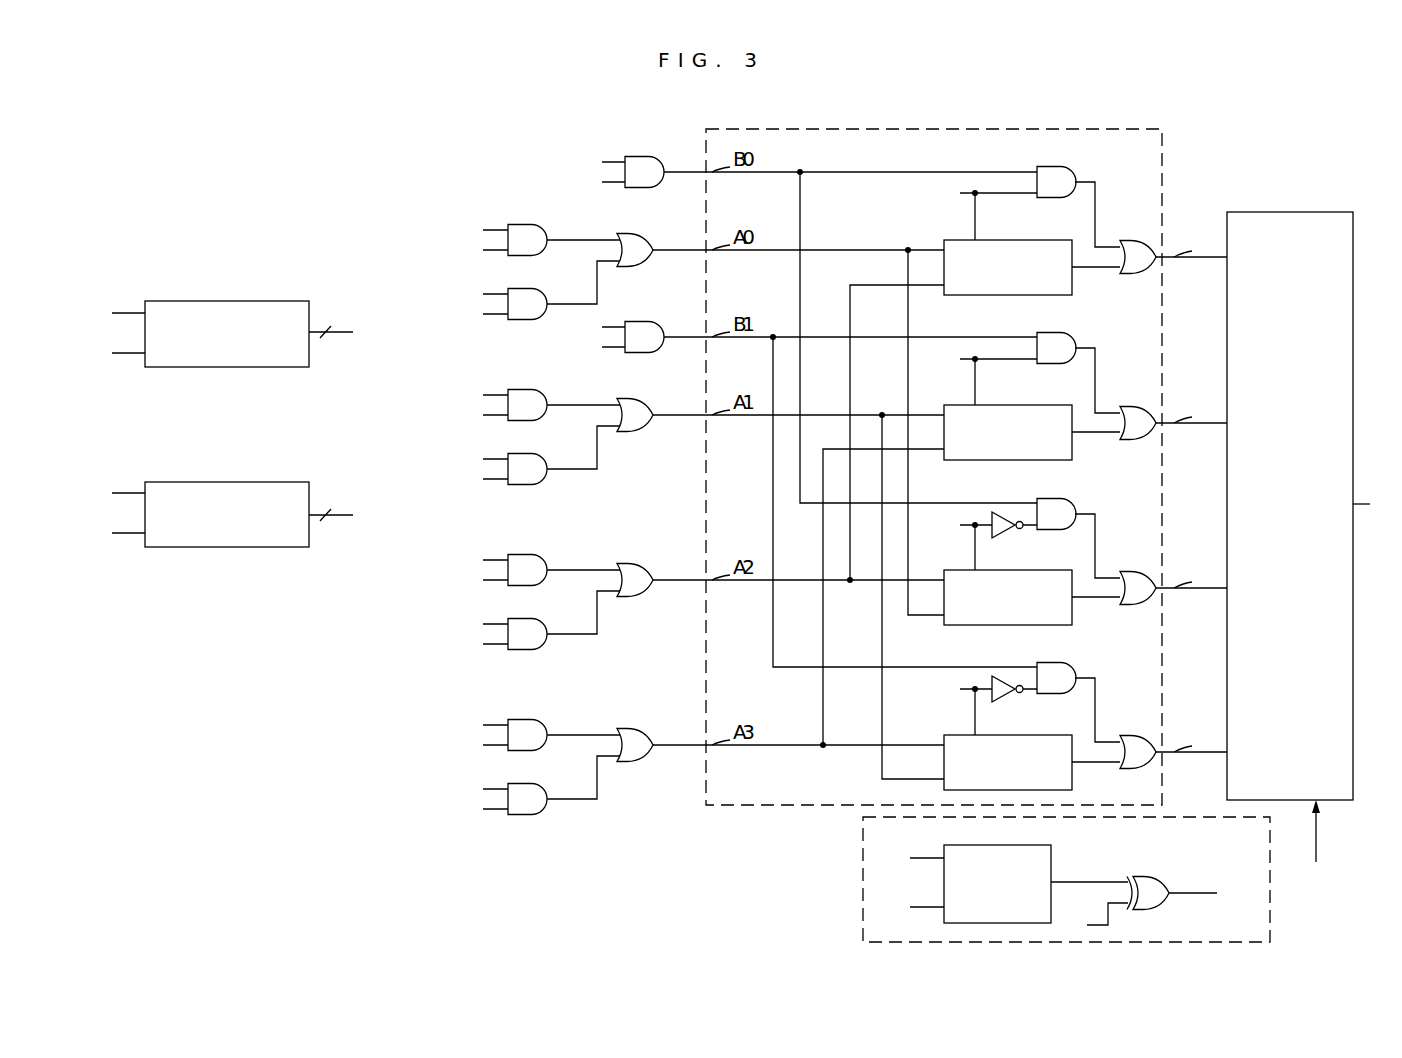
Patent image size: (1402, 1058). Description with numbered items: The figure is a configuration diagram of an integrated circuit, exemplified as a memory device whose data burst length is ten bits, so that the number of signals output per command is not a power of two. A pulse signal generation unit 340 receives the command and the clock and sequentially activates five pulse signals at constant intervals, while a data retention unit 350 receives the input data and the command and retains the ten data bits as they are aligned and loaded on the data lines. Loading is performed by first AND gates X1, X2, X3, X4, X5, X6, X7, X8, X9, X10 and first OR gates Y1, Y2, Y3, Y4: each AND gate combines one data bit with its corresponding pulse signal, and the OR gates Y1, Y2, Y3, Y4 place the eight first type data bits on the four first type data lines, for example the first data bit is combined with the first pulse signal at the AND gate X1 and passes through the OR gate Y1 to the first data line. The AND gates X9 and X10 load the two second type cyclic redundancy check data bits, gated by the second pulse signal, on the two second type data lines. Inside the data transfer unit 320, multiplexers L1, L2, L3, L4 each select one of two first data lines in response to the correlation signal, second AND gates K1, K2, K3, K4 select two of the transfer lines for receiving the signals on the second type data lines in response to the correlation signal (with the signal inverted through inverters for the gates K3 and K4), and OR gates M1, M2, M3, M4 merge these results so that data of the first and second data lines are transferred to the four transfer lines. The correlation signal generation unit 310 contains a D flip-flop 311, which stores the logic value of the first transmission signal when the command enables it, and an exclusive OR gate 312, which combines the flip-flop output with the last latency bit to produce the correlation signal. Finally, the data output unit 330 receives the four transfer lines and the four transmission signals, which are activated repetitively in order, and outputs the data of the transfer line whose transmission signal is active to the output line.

The correlation signal generation unit 310 is at (863, 878).
The D flip-flop 311 is at (1004, 845).
The exclusive OR gate 312 is at (1147, 878).
The data transfer unit 320 is at (1105, 129).
The data output unit 330 is at (1303, 213).
The pulse signal generation unit 340 is at (272, 301).
The data retention unit 350 is at (272, 482).
The first AND gate X1 is at (529, 225).
The first AND gate X2 is at (529, 289).
The first AND gate X3 is at (529, 390).
The first AND gate X4 is at (529, 454).
The first AND gate X5 is at (529, 555).
The first AND gate X6 is at (529, 619).
The first AND gate X7 is at (529, 720).
The first AND gate X8 is at (529, 784).
The first AND gate X9 is at (645, 157).
The first AND gate X10 is at (645, 322).
The first OR gate Y1 is at (633, 235).
The first OR gate Y2 is at (633, 400).
The first OR gate Y3 is at (633, 565).
The first OR gate Y4 is at (633, 730).
The second AND gate K1 is at (1060, 168).
The second AND gate K2 is at (1060, 334).
The second AND gate K3 is at (1060, 500).
The second AND gate K4 is at (1060, 664).
The multiplexer L1 is at (1036, 241).
The multiplexer L2 is at (1036, 406).
The multiplexer L3 is at (1036, 571).
The multiplexer L4 is at (1036, 736).
The OR gate M1 is at (1131, 240).
The OR gate M2 is at (1131, 406).
The OR gate M3 is at (1131, 571).
The OR gate M4 is at (1131, 735).